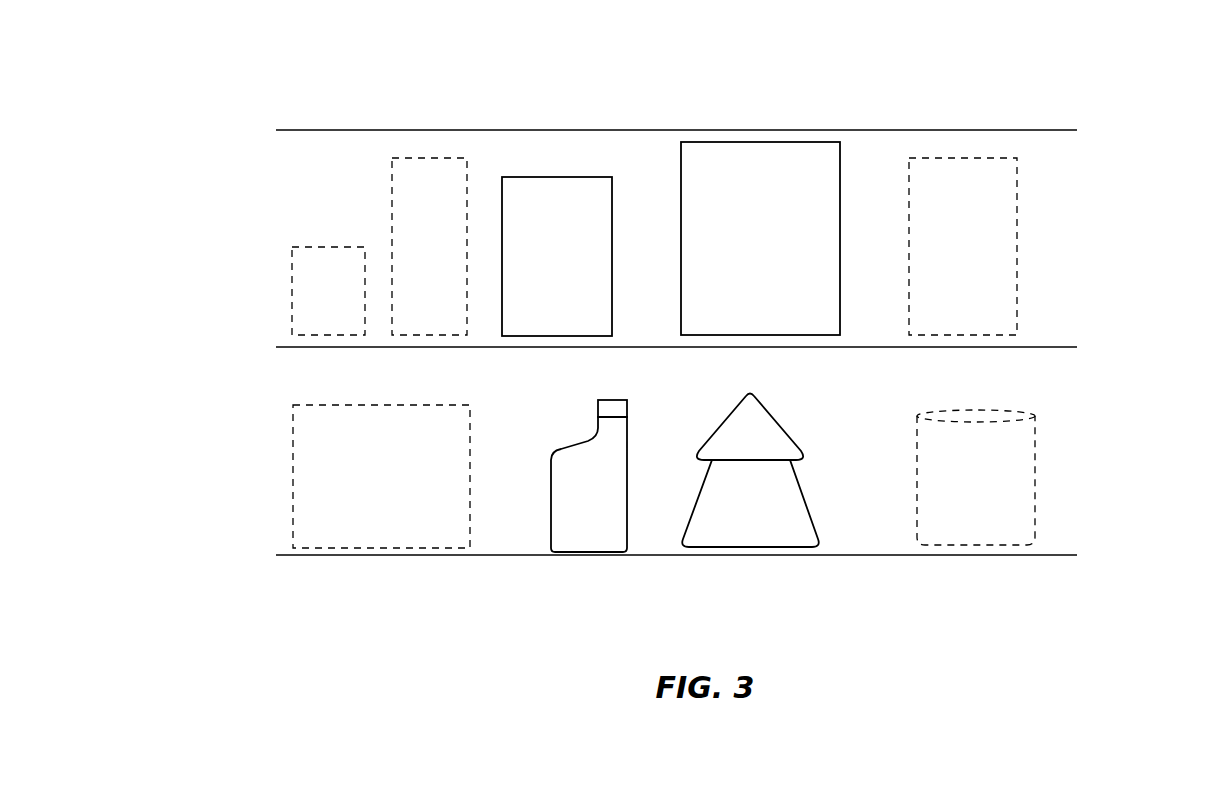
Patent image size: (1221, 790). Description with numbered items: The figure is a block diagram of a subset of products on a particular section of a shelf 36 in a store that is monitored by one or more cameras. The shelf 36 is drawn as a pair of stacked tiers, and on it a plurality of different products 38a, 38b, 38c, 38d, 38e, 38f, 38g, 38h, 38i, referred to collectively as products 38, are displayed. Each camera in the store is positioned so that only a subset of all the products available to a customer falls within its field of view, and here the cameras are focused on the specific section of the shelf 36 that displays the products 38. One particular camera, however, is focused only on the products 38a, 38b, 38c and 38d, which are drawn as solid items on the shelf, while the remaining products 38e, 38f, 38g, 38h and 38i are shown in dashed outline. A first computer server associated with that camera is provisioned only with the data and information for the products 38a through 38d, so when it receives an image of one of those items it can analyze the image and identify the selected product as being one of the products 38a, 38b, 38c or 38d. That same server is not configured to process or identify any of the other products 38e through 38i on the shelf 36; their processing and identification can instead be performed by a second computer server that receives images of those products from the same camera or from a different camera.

The shelf 36 is at (1073, 102).
The products 38 is at (268, 398).
The product 38a is at (537, 271).
The product 38b is at (735, 251).
The product 38c is at (568, 510).
The product 38d is at (735, 511).
The product 38e is at (308, 306).
The product 38f is at (410, 270).
The product 38g is at (362, 483).
The product 38h is at (942, 271).
The product 38i is at (964, 505).